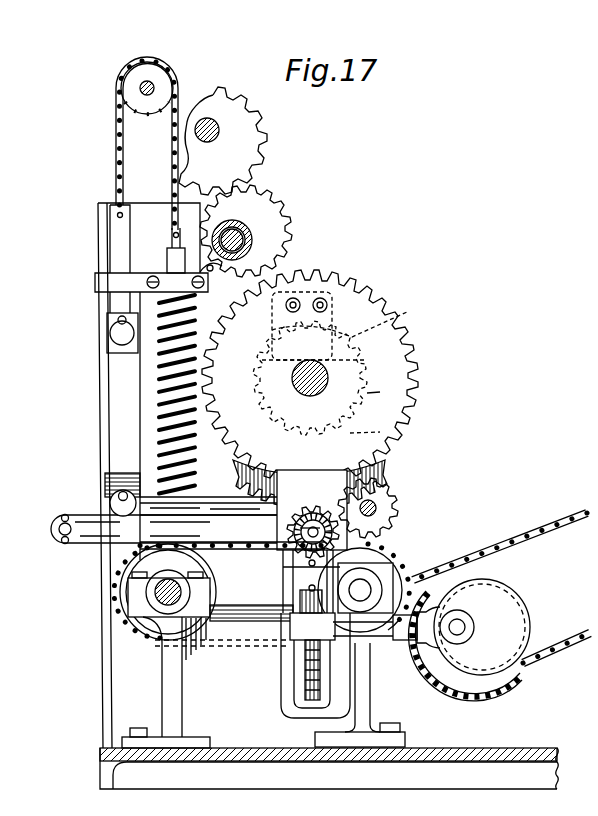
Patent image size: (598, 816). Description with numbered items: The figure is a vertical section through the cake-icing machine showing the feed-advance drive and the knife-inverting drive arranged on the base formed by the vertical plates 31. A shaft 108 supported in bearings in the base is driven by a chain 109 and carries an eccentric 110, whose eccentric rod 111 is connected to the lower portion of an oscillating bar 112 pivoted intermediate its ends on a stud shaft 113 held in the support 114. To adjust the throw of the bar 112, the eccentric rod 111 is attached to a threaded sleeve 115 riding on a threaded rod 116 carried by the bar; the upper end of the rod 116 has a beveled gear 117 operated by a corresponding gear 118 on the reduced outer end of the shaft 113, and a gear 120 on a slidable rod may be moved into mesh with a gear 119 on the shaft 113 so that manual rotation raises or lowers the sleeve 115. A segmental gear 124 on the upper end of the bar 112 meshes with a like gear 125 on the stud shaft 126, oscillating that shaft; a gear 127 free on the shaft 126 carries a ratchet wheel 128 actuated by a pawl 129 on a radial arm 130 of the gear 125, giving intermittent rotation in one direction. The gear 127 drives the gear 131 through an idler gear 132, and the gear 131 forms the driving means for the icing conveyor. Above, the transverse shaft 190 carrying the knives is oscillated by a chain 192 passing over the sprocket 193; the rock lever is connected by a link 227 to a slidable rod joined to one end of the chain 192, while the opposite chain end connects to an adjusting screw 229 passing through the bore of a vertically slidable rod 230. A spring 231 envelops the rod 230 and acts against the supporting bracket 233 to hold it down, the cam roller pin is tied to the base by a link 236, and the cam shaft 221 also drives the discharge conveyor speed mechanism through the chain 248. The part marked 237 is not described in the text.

The vertical plates 31 is at (107, 320).
The shaft 108 is at (460, 626).
The chain 109 is at (531, 535).
The eccentric 110 is at (532, 617).
The eccentric rod 111 is at (370, 648).
The oscillating bar 112 is at (277, 495).
The stud shaft 113 is at (300, 529).
The support 114 is at (293, 728).
The threaded sleeve 115 is at (297, 636).
The threaded rod 116 is at (310, 687).
The beveled gear 117 is at (275, 565).
The gear 118 is at (295, 540).
The gear 119 is at (313, 470).
The gear 120 is at (398, 513).
The segmental gear 124 is at (380, 432).
The gear 125 is at (367, 393).
The stud shaft 126 is at (311, 393).
The gear 127 is at (318, 278).
The ratchet wheel 128 is at (407, 312).
The pawl 129 is at (346, 279).
The radial arm 130 is at (281, 352).
The gear 131 is at (264, 126).
The idler gear 132 is at (272, 200).
The transverse shaft 190 is at (143, 88).
The chain 192 is at (116, 154).
The sprocket 193 is at (137, 70).
The transverse shaft 221 is at (403, 558).
The link 227 is at (118, 398).
The adjusting screw 229 is at (131, 218).
The vertically slidable rod 230 is at (167, 262).
The spring 231 is at (160, 430).
The supporting bracket 233 is at (213, 270).
The link 236 is at (90, 520).
The rod 237 is at (65, 544).
The chain 248 is at (190, 545).